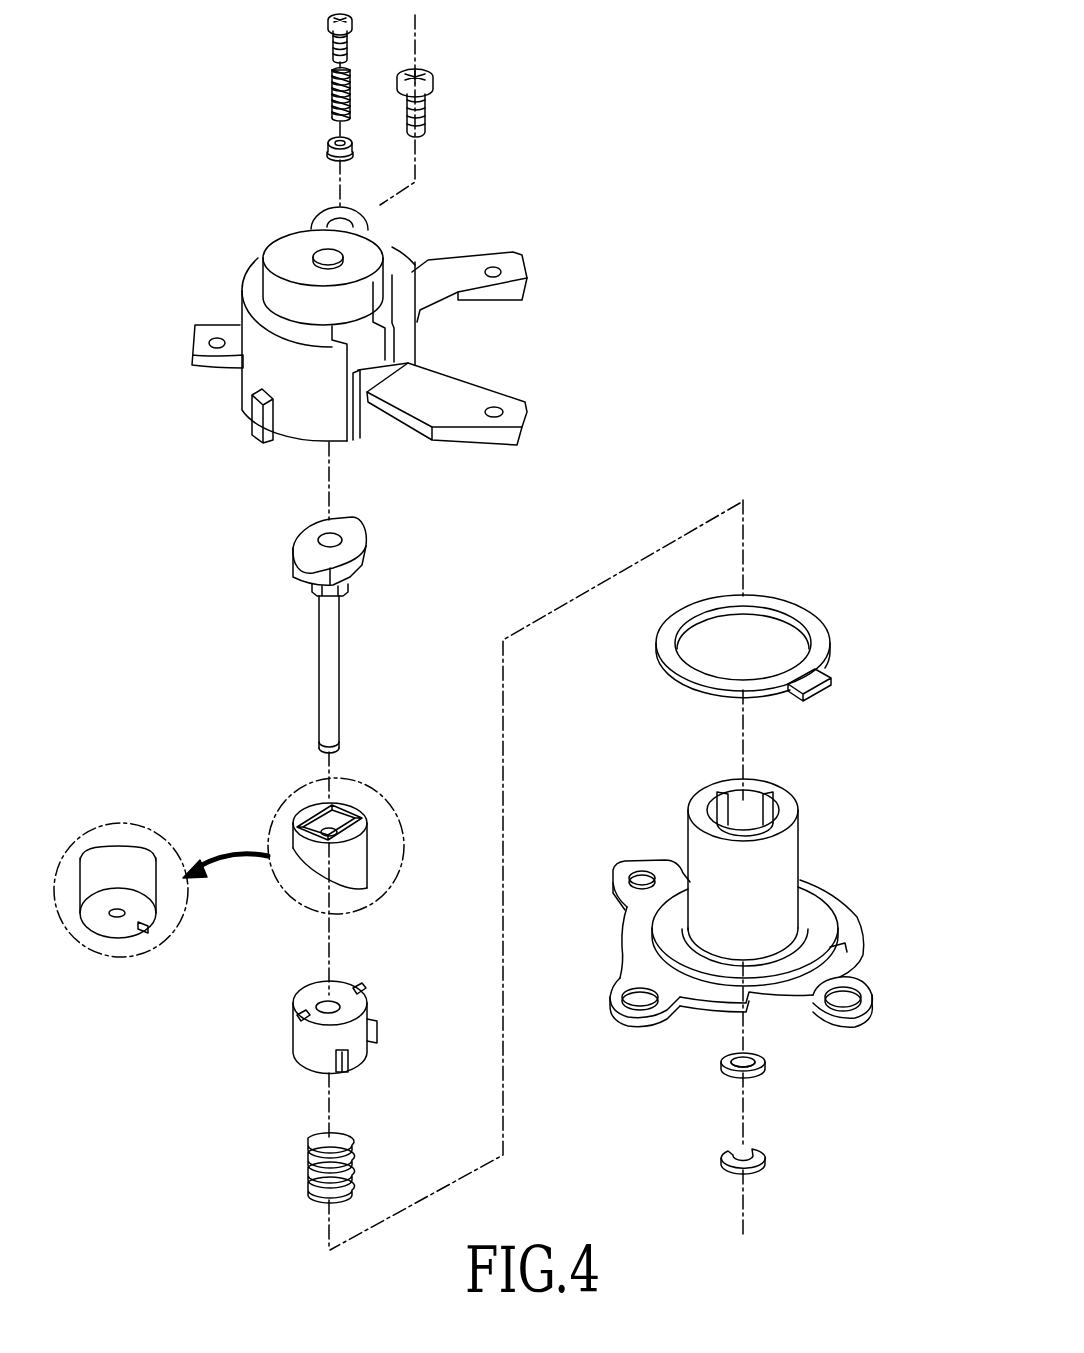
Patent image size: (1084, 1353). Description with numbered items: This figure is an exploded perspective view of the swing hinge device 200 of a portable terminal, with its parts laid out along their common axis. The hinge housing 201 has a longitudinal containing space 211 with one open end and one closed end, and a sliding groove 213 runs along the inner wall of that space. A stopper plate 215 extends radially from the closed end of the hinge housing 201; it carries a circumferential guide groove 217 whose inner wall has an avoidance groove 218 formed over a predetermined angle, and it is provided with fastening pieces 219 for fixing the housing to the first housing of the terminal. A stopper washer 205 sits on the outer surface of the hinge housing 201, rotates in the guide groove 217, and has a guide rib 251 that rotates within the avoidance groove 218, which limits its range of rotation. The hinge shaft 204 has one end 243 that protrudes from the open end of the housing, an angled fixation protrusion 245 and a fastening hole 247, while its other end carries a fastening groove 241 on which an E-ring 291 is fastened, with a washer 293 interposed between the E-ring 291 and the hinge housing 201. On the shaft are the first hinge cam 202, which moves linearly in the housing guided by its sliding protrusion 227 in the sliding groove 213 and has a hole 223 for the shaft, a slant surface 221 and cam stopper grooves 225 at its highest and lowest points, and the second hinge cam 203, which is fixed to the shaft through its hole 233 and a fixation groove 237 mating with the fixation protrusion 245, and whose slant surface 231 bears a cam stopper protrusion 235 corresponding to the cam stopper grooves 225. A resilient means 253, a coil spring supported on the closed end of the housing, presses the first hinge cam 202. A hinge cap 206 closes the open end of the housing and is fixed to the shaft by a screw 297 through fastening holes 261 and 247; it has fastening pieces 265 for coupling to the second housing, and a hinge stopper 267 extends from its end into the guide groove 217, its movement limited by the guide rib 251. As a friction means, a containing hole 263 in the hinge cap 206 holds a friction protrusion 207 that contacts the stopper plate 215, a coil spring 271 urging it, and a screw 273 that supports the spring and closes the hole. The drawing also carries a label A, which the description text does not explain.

The swing hinge device 200 is at (795, 279).
The hinge housing 201 is at (729, 894).
The first hinge cam 202 is at (328, 1028).
The second hinge cam 203 is at (267, 889).
The hinge shaft 204 is at (332, 631).
The stopper washer 205 is at (779, 652).
The hinge cap 206 is at (384, 332).
The friction protrusion 207 is at (320, 146).
The containing space 211 is at (732, 797).
The sliding groove 213 is at (718, 795).
The stopper plate 215 is at (736, 942).
The guide groove 217 is at (665, 947).
The avoidance groove 218 is at (797, 1000).
The fastening piece 219 is at (625, 868).
The slant surface 221 is at (312, 1005).
The hole 223 is at (330, 1003).
The cam stopper groove 225 is at (364, 992).
The sliding protrusion 227 is at (378, 1030).
The slant surface 231 is at (352, 893).
The hole 233 is at (345, 820).
The cam stopper protrusion 235 is at (146, 932).
The fixation groove 237 is at (300, 812).
The fastening groove 241 is at (341, 748).
The one end of hinge shaft 243 is at (368, 548).
The fixation protrusion 245 is at (311, 588).
The fastening hole 247 is at (322, 540).
The guide rib 251 is at (842, 688).
The resilient means 253 is at (298, 1168).
The fastening hole 261 is at (362, 250).
The containing hole 263 is at (330, 222).
The fastening piece 265 is at (205, 357).
The hinge stopper 267 is at (262, 437).
The coil spring 271 is at (332, 93).
The screw 273 is at (327, 24).
The E-ring 291 is at (722, 1158).
The washer 293 is at (722, 1062).
The screw 297 is at (437, 75).
The rotation axis A is at (416, 28).